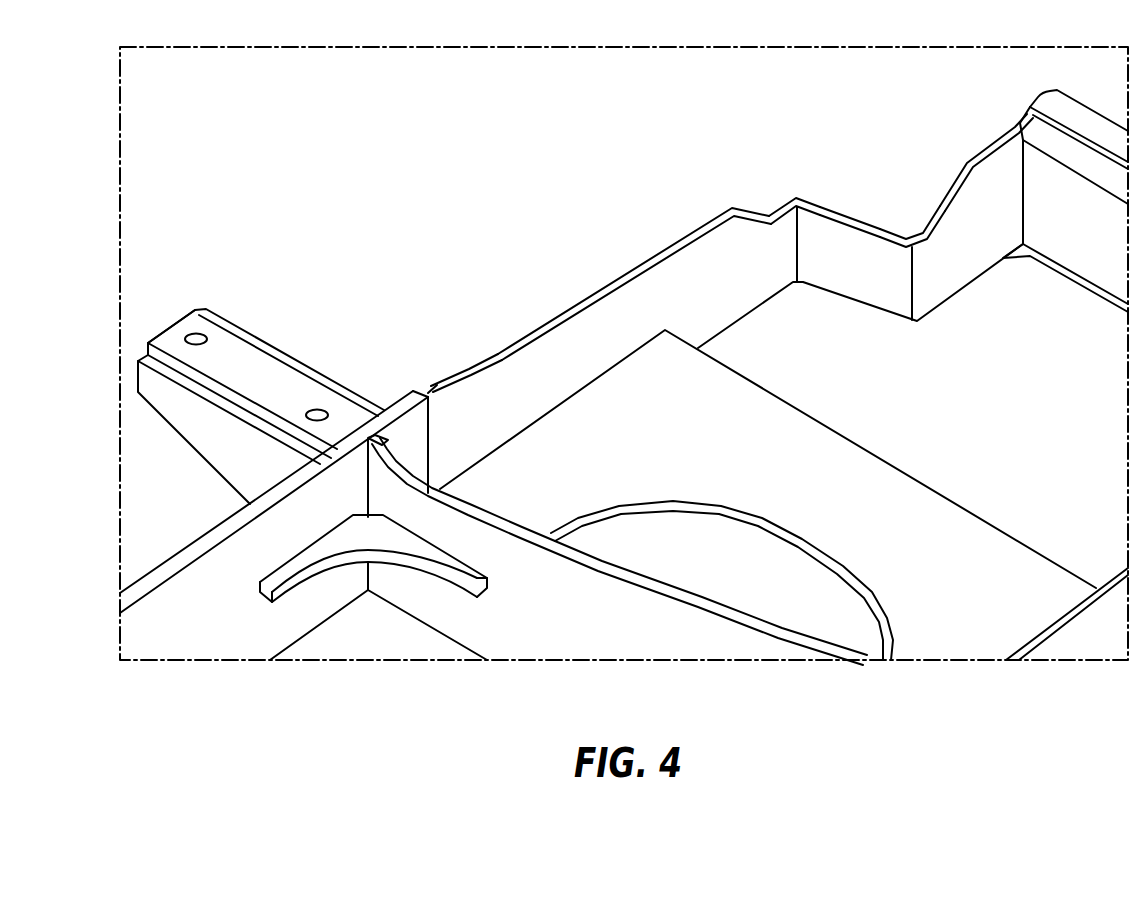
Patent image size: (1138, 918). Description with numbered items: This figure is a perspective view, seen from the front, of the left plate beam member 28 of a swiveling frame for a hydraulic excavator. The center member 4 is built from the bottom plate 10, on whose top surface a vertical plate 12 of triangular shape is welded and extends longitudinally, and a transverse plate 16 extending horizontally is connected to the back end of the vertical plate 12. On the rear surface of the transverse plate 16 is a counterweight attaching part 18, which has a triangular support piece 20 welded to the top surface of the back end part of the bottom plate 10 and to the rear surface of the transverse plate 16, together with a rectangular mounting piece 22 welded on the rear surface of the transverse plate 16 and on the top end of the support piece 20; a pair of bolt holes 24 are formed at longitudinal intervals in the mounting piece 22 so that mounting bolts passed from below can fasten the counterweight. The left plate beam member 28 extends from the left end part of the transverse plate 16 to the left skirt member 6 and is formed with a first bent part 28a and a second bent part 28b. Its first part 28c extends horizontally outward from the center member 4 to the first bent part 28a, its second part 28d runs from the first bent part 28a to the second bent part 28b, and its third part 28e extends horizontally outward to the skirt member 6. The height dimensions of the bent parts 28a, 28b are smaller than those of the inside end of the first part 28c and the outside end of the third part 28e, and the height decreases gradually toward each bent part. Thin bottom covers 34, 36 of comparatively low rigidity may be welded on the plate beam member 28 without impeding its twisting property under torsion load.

The center member 4 is at (146, 572).
The skirt member 6 is at (1068, 103).
The bottom plate 10 is at (373, 643).
The vertical plate 12 is at (628, 612).
The transverse plate 16 is at (195, 545).
The counterweight attaching part 18 is at (228, 338).
The support piece 20 is at (168, 398).
The mounting piece 22 is at (158, 336).
The bolt hole 24 is at (199, 337).
The left plate beam member 28 is at (493, 358).
The first bent part 28a is at (795, 197).
The second bent part 28b is at (908, 235).
The first part 28c is at (580, 352).
The second part 28d is at (865, 247).
The third part 28e is at (993, 178).
The bottom cover 34 is at (870, 555).
The bottom cover 36 is at (760, 345).